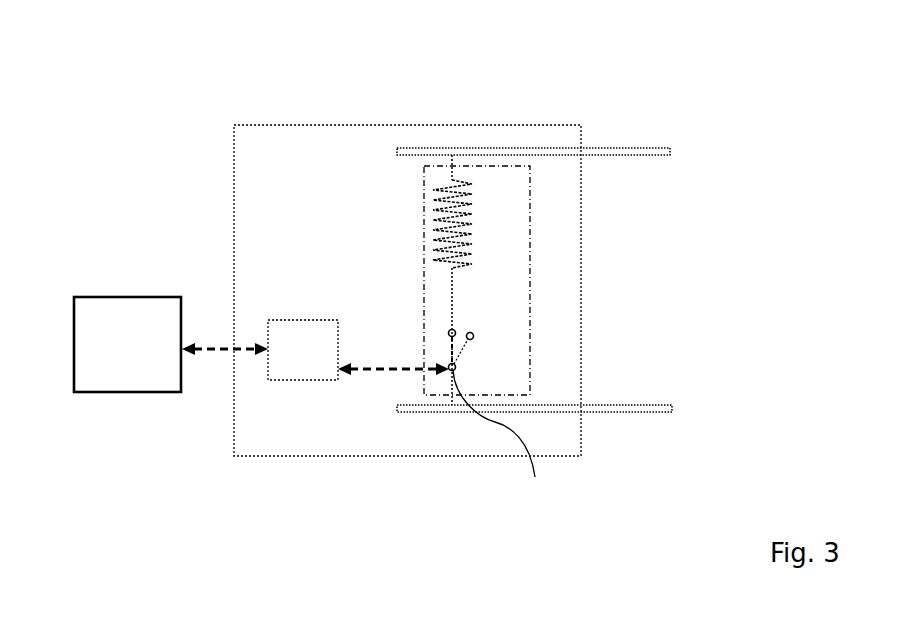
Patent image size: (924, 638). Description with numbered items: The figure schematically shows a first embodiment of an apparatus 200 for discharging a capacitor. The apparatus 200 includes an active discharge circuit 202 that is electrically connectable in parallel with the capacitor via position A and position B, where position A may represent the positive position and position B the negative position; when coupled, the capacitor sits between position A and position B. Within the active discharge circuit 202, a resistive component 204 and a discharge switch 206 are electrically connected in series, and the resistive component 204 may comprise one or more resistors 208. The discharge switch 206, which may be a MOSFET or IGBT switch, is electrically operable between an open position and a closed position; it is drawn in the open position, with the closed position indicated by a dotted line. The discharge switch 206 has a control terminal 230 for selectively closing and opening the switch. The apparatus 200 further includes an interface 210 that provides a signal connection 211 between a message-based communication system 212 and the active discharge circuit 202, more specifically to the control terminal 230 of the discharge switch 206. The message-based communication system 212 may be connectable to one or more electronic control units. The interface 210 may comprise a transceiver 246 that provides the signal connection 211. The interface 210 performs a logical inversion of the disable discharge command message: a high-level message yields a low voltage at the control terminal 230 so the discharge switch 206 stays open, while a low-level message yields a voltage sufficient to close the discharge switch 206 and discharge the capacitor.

The apparatus 200 is at (199, 115).
The active discharge circuit 202 is at (424, 298).
The resistive component 204 is at (488, 221).
The discharge switch 206 is at (484, 351).
The resistor 208 is at (424, 205).
The interface 210 is at (316, 393).
The signal connection 211 is at (214, 360).
The message-based communication system 212 is at (127, 363).
The control terminal 230 is at (503, 437).
The transceiver 246 is at (289, 368).
The position A is at (653, 150).
The position B is at (663, 412).